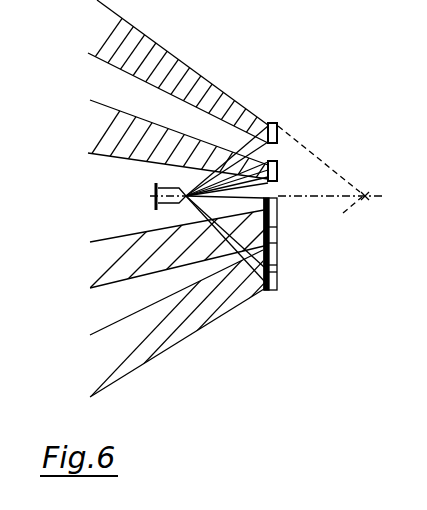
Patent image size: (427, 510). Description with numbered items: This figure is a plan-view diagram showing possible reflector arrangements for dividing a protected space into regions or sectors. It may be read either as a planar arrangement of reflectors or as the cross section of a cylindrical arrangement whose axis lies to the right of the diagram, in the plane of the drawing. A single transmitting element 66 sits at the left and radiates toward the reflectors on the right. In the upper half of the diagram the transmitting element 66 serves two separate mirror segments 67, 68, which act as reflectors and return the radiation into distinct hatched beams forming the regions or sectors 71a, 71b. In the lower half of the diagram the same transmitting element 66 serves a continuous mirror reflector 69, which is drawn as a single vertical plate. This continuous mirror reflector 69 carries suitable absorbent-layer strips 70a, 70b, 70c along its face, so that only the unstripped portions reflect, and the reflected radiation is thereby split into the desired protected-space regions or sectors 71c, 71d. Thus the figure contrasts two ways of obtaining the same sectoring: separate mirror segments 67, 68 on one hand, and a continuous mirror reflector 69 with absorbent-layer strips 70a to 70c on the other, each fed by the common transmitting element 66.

The transmitting element 66 is at (152, 197).
The mirror segment 67 is at (277, 124).
The mirror segment 68 is at (278, 172).
The continuous mirror reflector 69 is at (301, 270).
The absorbent-layer strip 70a is at (278, 208).
The absorbent-layer strip 70b is at (278, 244).
The absorbent-layer strip 70c is at (278, 311).
The region or sector 71a is at (184, 80).
The region or sector 71b is at (190, 135).
The region or sector 71c is at (210, 250).
The region or sector 71d is at (233, 315).